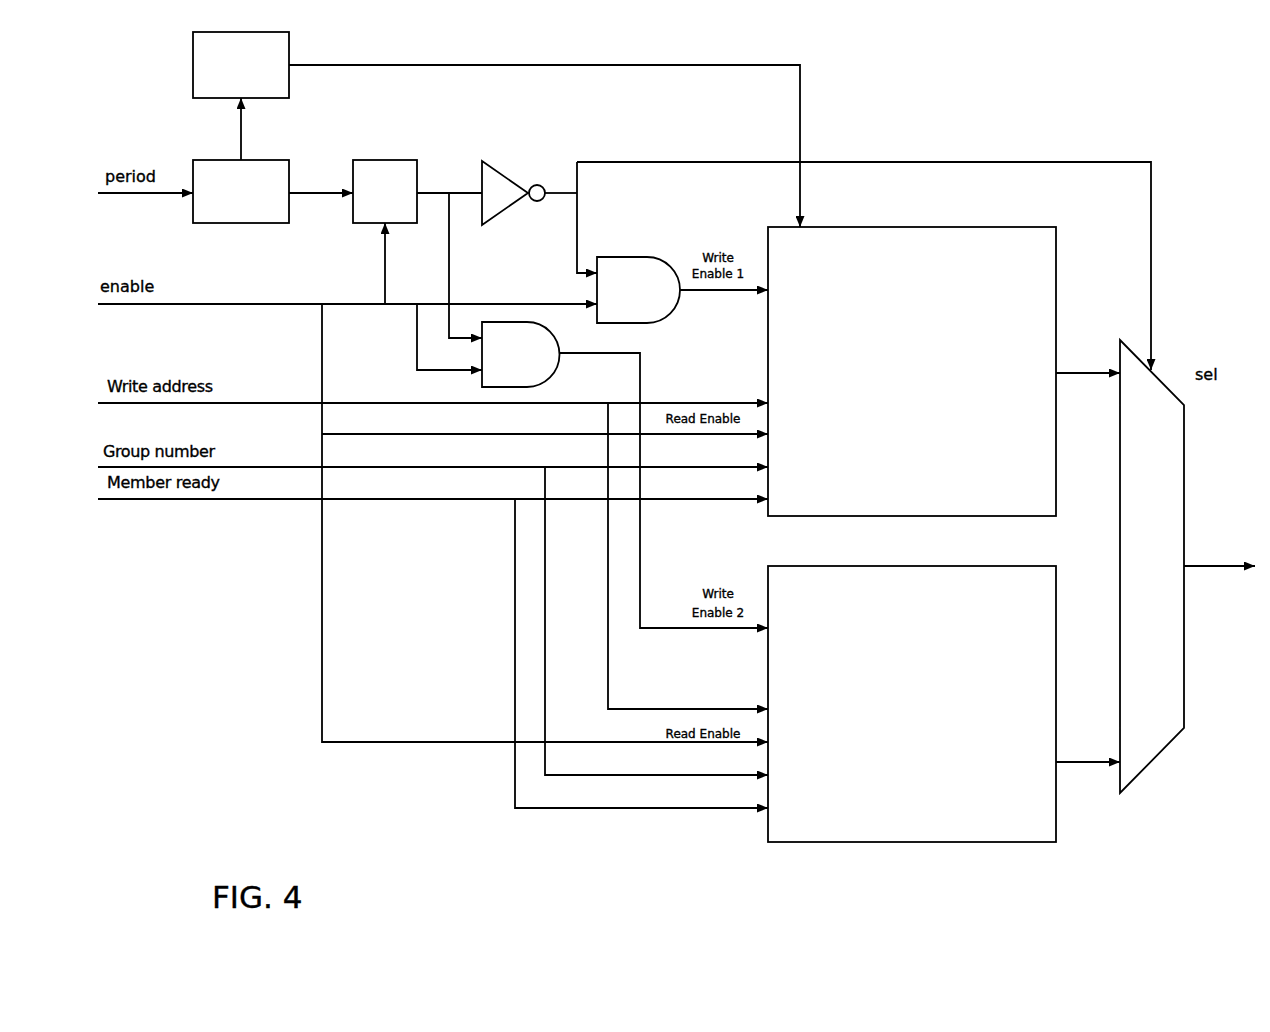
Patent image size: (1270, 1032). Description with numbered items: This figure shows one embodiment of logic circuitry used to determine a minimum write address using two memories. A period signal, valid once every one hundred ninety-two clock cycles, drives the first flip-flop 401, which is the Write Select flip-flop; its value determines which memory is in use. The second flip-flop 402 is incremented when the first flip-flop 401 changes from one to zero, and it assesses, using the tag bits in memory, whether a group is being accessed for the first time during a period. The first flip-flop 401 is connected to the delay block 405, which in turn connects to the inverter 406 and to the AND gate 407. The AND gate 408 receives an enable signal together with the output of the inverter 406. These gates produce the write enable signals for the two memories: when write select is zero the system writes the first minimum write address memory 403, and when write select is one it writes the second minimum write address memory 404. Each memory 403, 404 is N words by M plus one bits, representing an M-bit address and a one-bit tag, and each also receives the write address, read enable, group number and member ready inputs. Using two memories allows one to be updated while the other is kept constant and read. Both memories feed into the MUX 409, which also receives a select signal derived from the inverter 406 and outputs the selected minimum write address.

The first flip-flop 401 is at (241, 191).
The second flip-flop 402 is at (241, 65).
The Minimum Write Address 1 memory 403 is at (912, 371).
The Minimum Write Address 2 memory 404 is at (912, 704).
The delay block 405 is at (385, 191).
The inverter 406 is at (513, 181).
The AND gate 407 is at (638, 290).
The AND gate 408 is at (521, 354).
The MUX 409 is at (1175, 566).